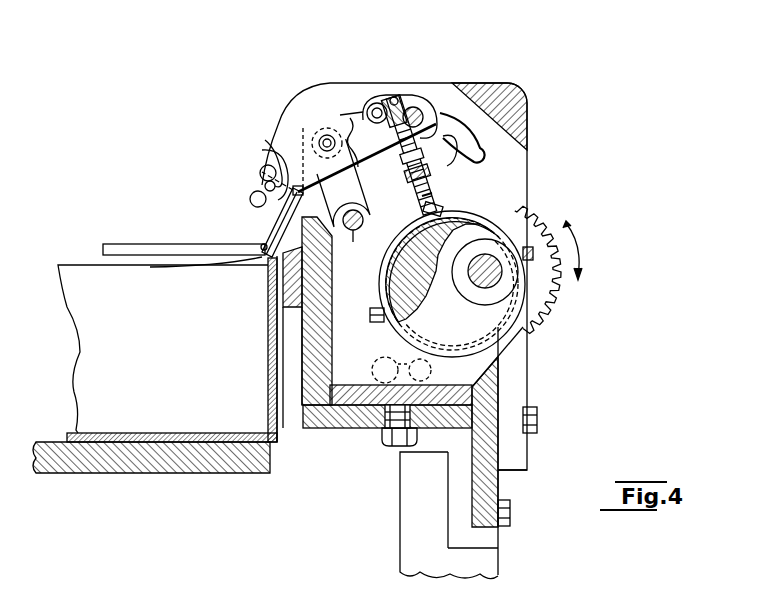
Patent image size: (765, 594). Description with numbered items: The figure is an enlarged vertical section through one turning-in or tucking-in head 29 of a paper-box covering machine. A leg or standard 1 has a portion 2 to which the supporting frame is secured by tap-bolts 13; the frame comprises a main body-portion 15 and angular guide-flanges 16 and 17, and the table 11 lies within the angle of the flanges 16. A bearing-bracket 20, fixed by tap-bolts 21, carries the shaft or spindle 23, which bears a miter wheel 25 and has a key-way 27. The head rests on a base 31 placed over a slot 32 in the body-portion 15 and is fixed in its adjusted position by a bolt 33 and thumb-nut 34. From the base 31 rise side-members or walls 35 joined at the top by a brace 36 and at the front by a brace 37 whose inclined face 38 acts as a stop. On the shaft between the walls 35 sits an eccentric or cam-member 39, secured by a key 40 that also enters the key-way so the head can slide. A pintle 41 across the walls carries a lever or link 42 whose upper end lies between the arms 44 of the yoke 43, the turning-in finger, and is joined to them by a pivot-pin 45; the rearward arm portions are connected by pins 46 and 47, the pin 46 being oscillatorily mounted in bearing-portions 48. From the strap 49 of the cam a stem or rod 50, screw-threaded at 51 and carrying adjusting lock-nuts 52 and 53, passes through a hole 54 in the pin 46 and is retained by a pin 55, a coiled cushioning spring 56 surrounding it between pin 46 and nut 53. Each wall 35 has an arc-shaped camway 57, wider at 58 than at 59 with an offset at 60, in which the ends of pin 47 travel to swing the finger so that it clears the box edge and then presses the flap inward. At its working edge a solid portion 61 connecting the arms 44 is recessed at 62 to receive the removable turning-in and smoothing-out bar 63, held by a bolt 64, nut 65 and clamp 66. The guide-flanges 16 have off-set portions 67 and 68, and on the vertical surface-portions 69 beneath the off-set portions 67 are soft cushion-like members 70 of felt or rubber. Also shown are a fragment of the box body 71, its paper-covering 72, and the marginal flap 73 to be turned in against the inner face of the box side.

The leg or standard 1 is at (412, 542).
The supporting portion of leg 2 is at (452, 490).
The table 11 is at (166, 474).
The tap-bolt 13 is at (511, 514).
The main body-portion 15 is at (338, 429).
The guide-flange 16 is at (306, 429).
The guide-flange 17 is at (518, 390).
The bearing-bracket or support 20 is at (500, 405).
The tap-bolt 21 is at (538, 420).
The shaft or spindle 23 is at (470, 288).
The miter or bevel wheel 25 is at (540, 223).
The key-way 27 is at (488, 288).
The turning-in or tucking-in head 29 is at (524, 100).
The base 31 is at (353, 385).
The slot or elongated opening 32 is at (390, 430).
The bolt 33 is at (395, 447).
The thumb-nut 34 is at (380, 360).
The side-member or wall 35 is at (528, 186).
The brace 36 is at (492, 84).
The brace 37 is at (370, 313).
The inclined face or surface 38 is at (296, 192).
The eccentric or cam-member 39 is at (466, 216).
The key 40 is at (493, 248).
The pintle 41 is at (353, 231).
The lever or link 42 is at (358, 232).
The yoke or turning-in finger 43 is at (294, 134).
The arm 44 is at (332, 122).
The pivot-pin 45 is at (323, 136).
The oscillating pin 46 is at (370, 161).
The pin 47 is at (428, 112).
The perforation or bearing-portion 48 is at (350, 118).
The strap 49 is at (393, 280).
The stem or rod 50 is at (382, 104).
The screw-threaded portion 51 is at (440, 216).
The adjusting lock-nut 52 is at (422, 200).
The adjusting lock-nut 53 is at (404, 182).
The hole or opening 54 is at (415, 107).
The pin 55 is at (397, 98).
The coiled cushioning spring 56 is at (404, 164).
The arc-shaped opening or camway 57 is at (458, 134).
The wider portion of camway 58 is at (478, 157).
The narrower portion of camway 59 is at (372, 104).
The offset 60 is at (431, 176).
The solid portion 61 is at (250, 202).
The recess 62 is at (268, 238).
The turning-in and smoothing-out bar 63 is at (277, 228).
The bolt 64 is at (262, 158).
The nut 65 is at (260, 175).
The clamp 66 is at (272, 162).
The off-set portion 67 is at (261, 247).
The off-set portion 68 is at (268, 345).
The vertically disposed surface-portion 69 is at (280, 304).
The cushion-like member 70 is at (146, 257).
The box body 71 is at (80, 404).
The paper-covering 72 is at (270, 374).
The marginal portion or flap 73 is at (210, 267).